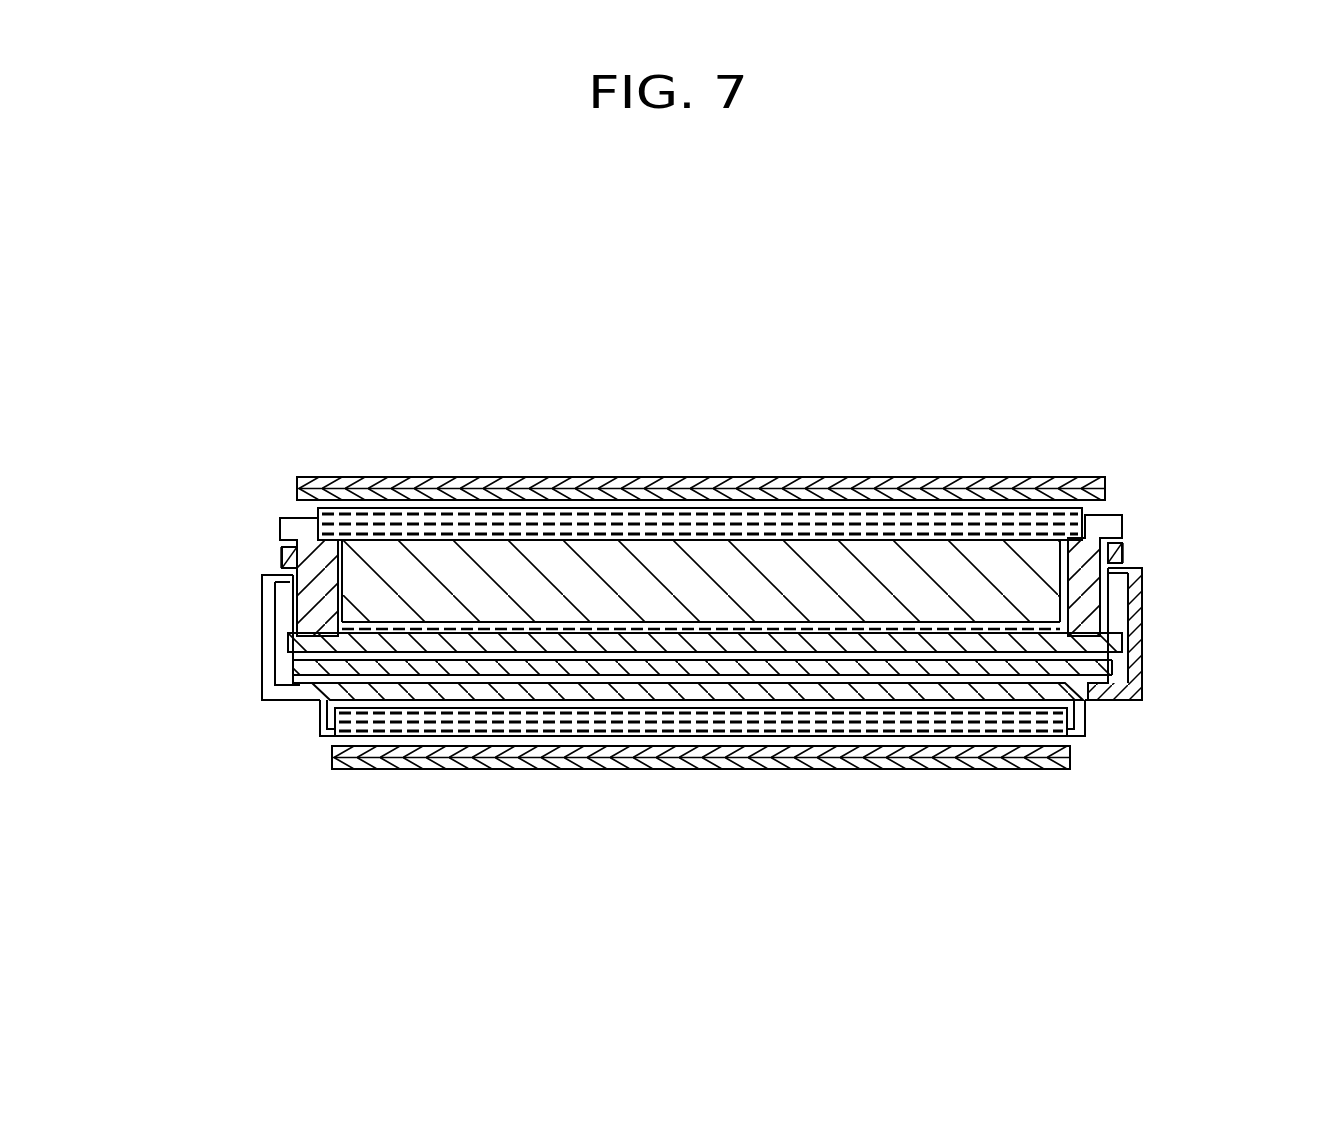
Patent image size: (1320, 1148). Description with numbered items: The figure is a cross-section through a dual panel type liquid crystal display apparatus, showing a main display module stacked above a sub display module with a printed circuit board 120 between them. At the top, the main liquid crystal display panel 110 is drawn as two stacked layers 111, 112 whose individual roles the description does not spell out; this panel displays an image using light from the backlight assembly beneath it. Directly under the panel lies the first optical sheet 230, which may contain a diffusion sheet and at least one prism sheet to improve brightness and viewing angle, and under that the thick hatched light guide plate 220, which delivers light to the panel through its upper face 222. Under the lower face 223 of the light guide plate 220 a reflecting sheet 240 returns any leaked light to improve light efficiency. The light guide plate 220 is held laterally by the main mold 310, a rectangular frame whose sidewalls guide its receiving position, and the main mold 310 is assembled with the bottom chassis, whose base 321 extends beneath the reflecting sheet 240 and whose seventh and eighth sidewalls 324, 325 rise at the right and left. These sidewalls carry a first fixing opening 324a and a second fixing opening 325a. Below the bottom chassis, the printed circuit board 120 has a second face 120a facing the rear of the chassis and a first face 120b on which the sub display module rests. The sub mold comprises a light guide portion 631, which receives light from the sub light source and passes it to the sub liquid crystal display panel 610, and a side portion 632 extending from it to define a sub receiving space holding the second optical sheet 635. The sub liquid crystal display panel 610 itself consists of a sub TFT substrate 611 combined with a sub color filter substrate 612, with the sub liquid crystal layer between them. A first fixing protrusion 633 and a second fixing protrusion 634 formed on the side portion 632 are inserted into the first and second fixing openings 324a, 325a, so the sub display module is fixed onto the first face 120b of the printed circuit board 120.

The main liquid crystal display panel 110 is at (701, 413).
The lower layer of upper plate 111 is at (497, 497).
The upper layer of upper plate 112 is at (438, 477).
The printed circuit board 120 is at (702, 791).
The second face 120a is at (493, 667).
The first face 120b is at (560, 656).
The light guide plate 220 is at (613, 518).
The upper face 222 is at (397, 542).
The lower face 223 is at (383, 622).
The first optical sheet 230 is at (962, 522).
The reflecting sheet 240 is at (910, 627).
The main mold 310 is at (282, 527).
The base 321 is at (1043, 642).
The seventh sidewall 324 is at (1124, 549).
The first fixing opening 324a is at (1136, 560).
The eighth sidewall 325 is at (283, 555).
The second fixing opening 325a is at (266, 563).
The sub liquid crystal display panel 610 is at (701, 836).
The sub TFT substrate 611 is at (423, 757).
The sub color filter substrate 612 is at (368, 769).
The light guide portion 631 is at (851, 690).
The side portion 632 is at (320, 722).
The first fixing protrusion 633 is at (1140, 640).
The second fixing protrusion 634 is at (293, 683).
The second optical sheet 635 is at (988, 727).